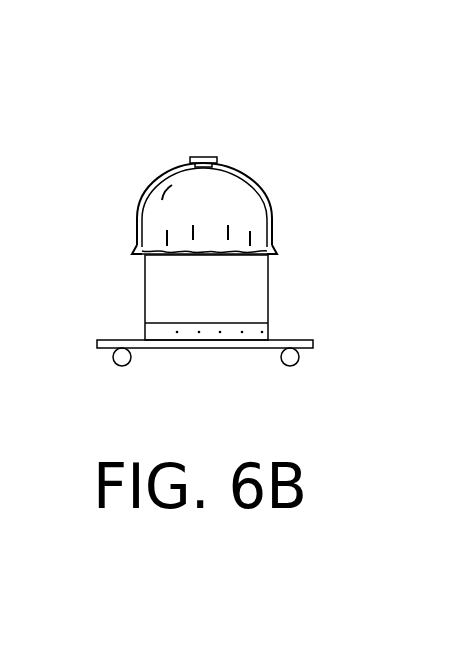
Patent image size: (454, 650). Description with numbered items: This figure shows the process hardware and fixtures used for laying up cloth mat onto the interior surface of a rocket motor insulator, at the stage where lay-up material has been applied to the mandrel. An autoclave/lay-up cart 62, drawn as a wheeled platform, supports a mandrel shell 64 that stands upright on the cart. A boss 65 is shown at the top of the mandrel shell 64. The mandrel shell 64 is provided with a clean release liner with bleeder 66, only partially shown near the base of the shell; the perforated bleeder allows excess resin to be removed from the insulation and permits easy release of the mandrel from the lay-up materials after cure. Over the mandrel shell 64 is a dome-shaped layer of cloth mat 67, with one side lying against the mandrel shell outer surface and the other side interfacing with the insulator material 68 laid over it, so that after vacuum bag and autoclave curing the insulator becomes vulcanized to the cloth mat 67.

The autoclave/lay-up cart 62 is at (302, 340).
The mandrel shell 64 is at (269, 301).
The boss 65 is at (203, 157).
The release liner with bleeder 66 is at (160, 332).
The cloth mat 67 is at (266, 195).
The insulator material 68 is at (272, 240).